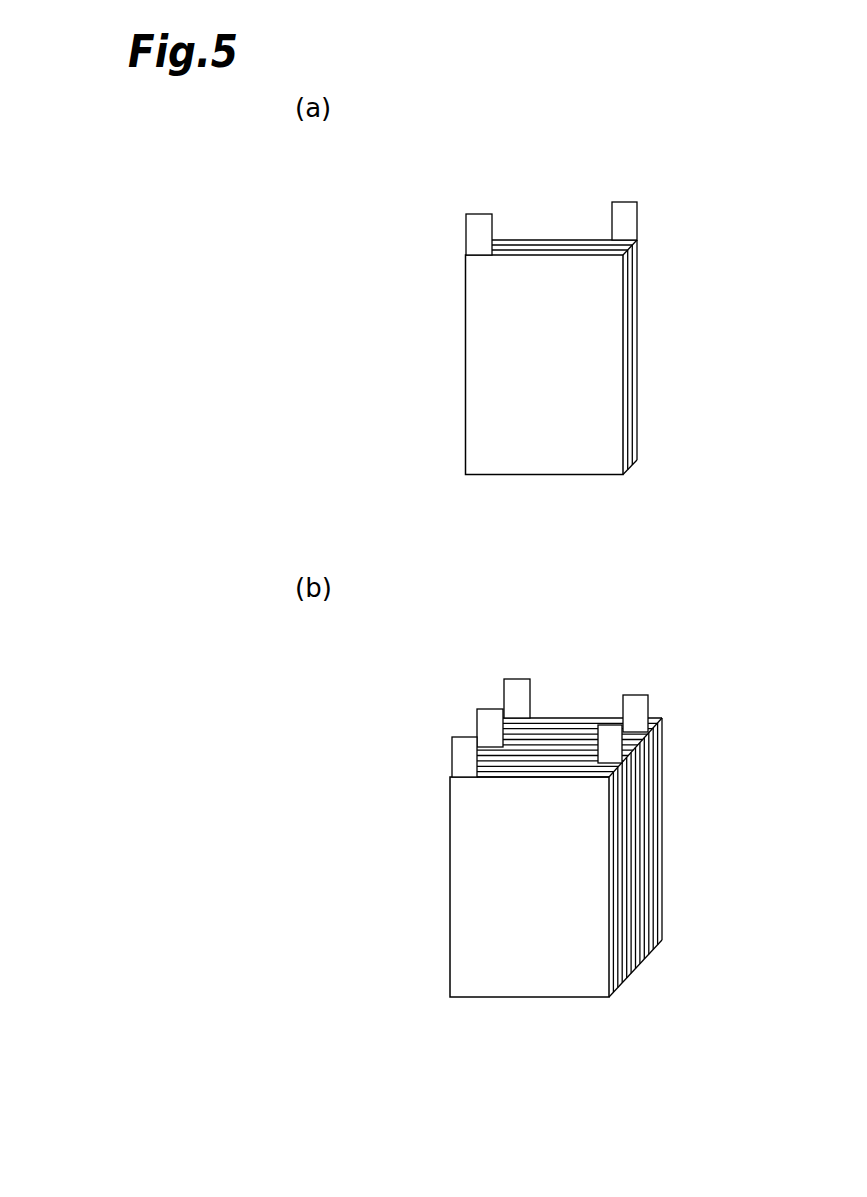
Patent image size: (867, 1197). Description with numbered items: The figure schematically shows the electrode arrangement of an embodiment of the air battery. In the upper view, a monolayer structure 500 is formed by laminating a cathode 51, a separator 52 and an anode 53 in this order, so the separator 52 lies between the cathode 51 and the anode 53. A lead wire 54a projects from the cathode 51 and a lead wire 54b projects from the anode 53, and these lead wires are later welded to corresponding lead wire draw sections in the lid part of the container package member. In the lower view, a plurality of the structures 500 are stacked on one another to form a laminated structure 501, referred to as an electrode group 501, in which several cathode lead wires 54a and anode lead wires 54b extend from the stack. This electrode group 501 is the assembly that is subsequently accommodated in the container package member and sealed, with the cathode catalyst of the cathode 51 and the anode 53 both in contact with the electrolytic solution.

The cathode 51 is at (603, 458).
The separator 52 is at (628, 440).
The anode 53 is at (635, 408).
The lead wire of the cathode 54a is at (474, 241).
The lead wire of the anode 54b is at (628, 223).
The structure 500 is at (673, 170).
The electrode group 501 is at (705, 629).